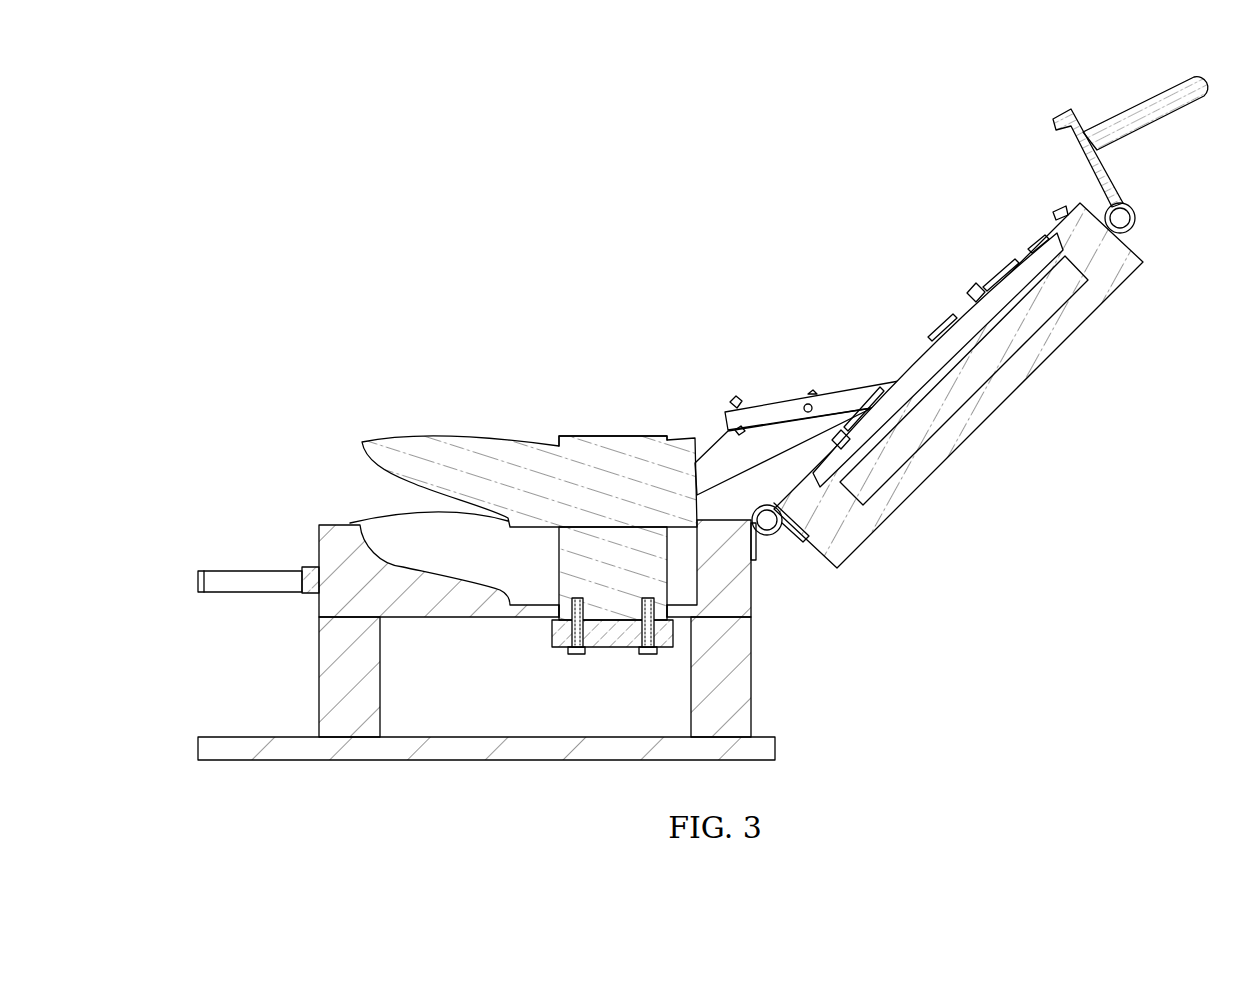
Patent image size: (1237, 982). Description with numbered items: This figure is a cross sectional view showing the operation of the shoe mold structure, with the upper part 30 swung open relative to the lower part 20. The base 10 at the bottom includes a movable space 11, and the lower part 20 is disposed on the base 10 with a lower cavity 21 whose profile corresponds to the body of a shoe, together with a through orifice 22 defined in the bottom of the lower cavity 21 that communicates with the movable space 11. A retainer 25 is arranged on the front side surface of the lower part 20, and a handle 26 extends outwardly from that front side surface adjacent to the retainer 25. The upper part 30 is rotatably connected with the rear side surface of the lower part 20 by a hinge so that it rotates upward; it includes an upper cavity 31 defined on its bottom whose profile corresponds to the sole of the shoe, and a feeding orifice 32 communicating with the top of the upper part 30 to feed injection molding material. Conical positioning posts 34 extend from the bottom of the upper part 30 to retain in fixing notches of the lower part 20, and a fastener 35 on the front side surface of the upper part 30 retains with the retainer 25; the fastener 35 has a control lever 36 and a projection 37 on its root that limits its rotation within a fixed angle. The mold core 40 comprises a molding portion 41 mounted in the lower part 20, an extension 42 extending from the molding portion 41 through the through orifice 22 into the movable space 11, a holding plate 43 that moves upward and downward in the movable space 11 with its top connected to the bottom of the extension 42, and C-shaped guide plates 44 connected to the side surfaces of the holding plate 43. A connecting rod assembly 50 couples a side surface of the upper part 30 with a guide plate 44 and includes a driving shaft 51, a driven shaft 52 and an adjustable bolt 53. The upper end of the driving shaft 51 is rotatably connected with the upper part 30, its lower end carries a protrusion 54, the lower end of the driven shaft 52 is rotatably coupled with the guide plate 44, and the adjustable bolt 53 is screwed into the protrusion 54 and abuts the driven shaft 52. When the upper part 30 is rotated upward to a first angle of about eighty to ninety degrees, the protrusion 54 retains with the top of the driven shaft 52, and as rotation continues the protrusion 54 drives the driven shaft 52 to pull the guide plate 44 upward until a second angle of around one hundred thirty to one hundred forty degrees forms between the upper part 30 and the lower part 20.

The base 10 is at (257, 742).
The movable space 11 is at (482, 705).
The lower part 20 is at (325, 552).
The lower cavity 21 is at (427, 531).
The through orifice 22 is at (558, 612).
The retainer 25 is at (302, 591).
The handle 26 is at (203, 576).
The upper part 30 is at (980, 385).
The upper cavity 31 is at (923, 364).
The feeding orifice 32 is at (993, 407).
The conical positioning post 34 is at (974, 295).
The fastener 35 is at (1113, 178).
The control lever 36 is at (1173, 113).
The projection 37 is at (1126, 233).
The mold core 40 is at (529, 521).
The molding portion 41 is at (533, 460).
The extension 42 is at (572, 568).
The holding plate 43 is at (608, 633).
The guide plate 44 is at (585, 440).
The connecting rod assembly 50 is at (772, 382).
The driving shaft 51 is at (847, 400).
The driven shaft 52 is at (710, 467).
The adjustable bolt 53 is at (738, 398).
The protrusion 54 is at (723, 440).